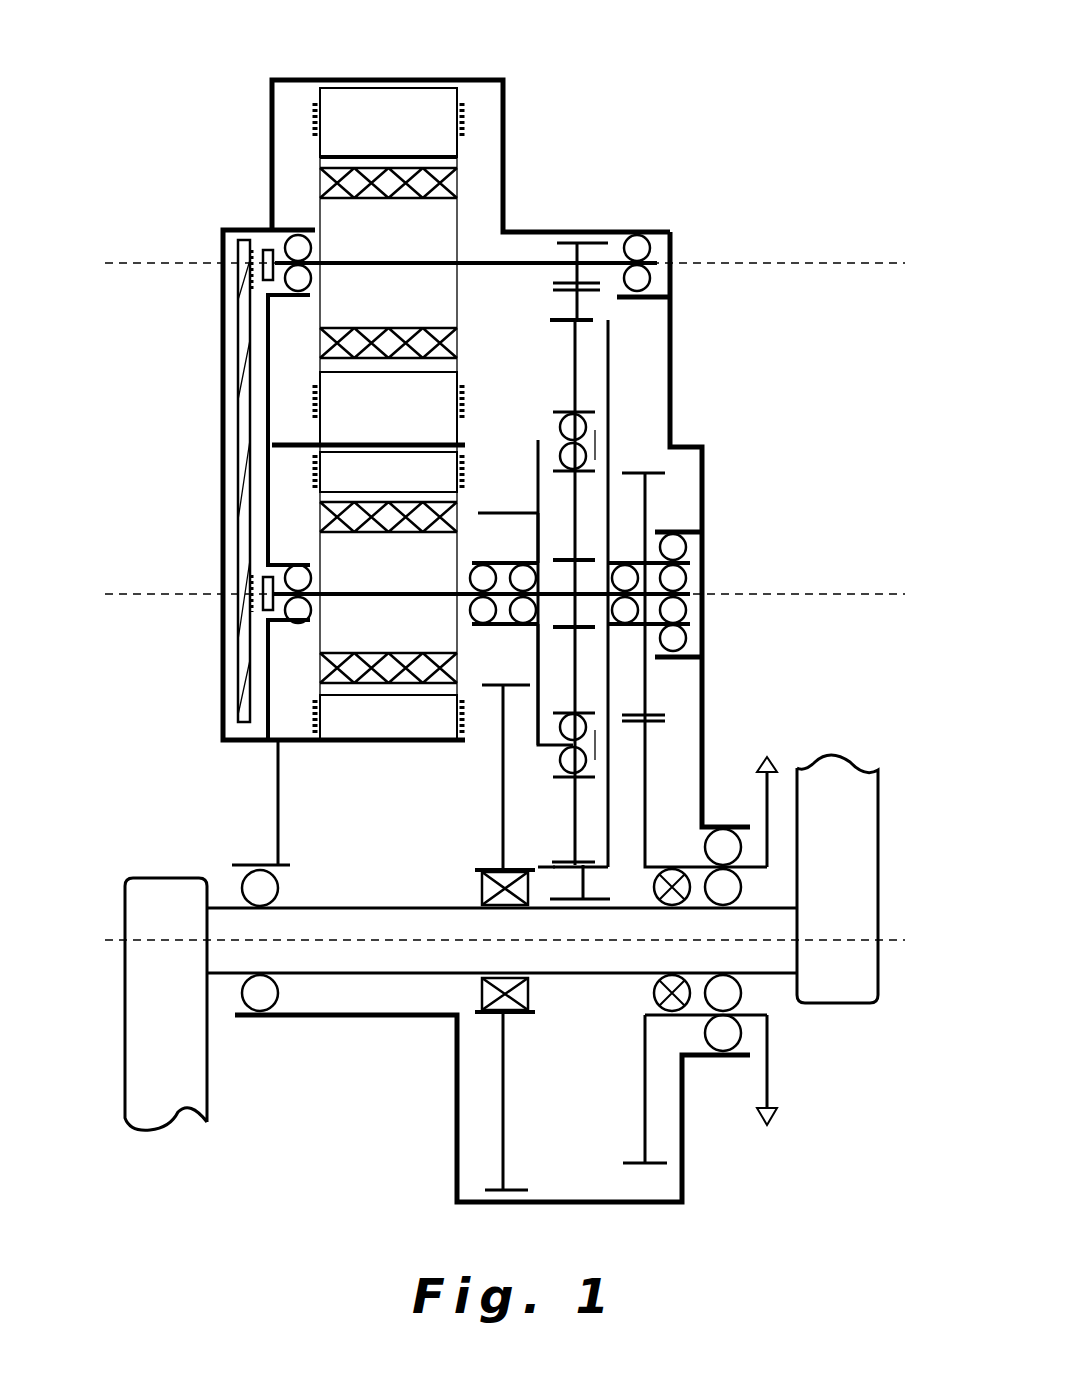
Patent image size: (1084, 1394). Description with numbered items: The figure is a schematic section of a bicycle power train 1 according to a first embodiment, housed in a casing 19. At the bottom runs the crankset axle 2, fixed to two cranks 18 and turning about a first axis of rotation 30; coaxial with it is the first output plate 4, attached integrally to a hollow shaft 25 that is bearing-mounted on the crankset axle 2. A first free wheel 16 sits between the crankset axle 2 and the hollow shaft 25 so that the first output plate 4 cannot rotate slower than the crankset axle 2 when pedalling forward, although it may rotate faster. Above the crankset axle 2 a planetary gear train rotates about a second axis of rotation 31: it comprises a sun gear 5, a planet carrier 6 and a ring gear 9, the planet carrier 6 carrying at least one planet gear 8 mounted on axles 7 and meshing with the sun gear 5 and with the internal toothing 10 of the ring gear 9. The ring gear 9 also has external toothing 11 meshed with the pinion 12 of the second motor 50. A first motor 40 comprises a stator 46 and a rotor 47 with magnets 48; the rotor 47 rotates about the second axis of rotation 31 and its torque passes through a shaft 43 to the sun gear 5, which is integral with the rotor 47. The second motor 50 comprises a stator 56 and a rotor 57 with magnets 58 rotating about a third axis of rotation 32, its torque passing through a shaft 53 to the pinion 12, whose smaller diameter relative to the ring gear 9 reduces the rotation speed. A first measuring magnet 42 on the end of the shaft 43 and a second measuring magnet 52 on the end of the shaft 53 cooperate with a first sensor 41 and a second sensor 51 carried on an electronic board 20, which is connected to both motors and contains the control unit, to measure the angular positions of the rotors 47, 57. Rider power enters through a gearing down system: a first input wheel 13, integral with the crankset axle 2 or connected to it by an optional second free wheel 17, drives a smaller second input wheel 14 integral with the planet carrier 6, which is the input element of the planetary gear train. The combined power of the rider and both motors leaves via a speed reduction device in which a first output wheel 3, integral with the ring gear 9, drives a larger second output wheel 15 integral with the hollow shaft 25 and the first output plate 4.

The power train 1 is at (688, 90).
The crankset axle 2 is at (402, 975).
The first output wheel 3 is at (647, 768).
The first output plate 4 is at (770, 808).
The sun gear 5 is at (575, 580).
The planet carrier 6 is at (542, 532).
The axles 7 is at (548, 743).
The planet gear 8 is at (578, 373).
The ring gear 9 is at (578, 300).
The internal toothing 10 is at (552, 865).
The external toothing 11 is at (603, 905).
The pinion 12 is at (600, 240).
The first input wheel 13 is at (500, 1133).
The second input wheel 14 is at (497, 513).
The second output wheel 15 is at (688, 866).
The first free wheel 16 is at (655, 995).
The second free wheel 17 is at (493, 1000).
The cranks 18 is at (167, 1000).
The casing 19 is at (675, 405).
The electronic board 20 is at (243, 350).
The hollow shaft 25 is at (711, 925).
The first axis of rotation 30 is at (888, 940).
The second axis of rotation 31 is at (823, 594).
The third axis of rotation 32 is at (823, 263).
The first motor 40 is at (315, 740).
The first sensor 41 is at (243, 602).
The first measuring magnet 42 is at (262, 588).
The shaft 43 is at (388, 594).
The stator 46 is at (340, 705).
The rotor 47 is at (352, 622).
The magnets 48 is at (315, 672).
The second motor 50 is at (318, 152).
The second sensor 51 is at (245, 265).
The second measuring magnet 52 is at (267, 252).
The shaft 53 is at (515, 262).
The stator 56 is at (430, 120).
The rotor 57 is at (428, 240).
The magnets 58 is at (447, 168).